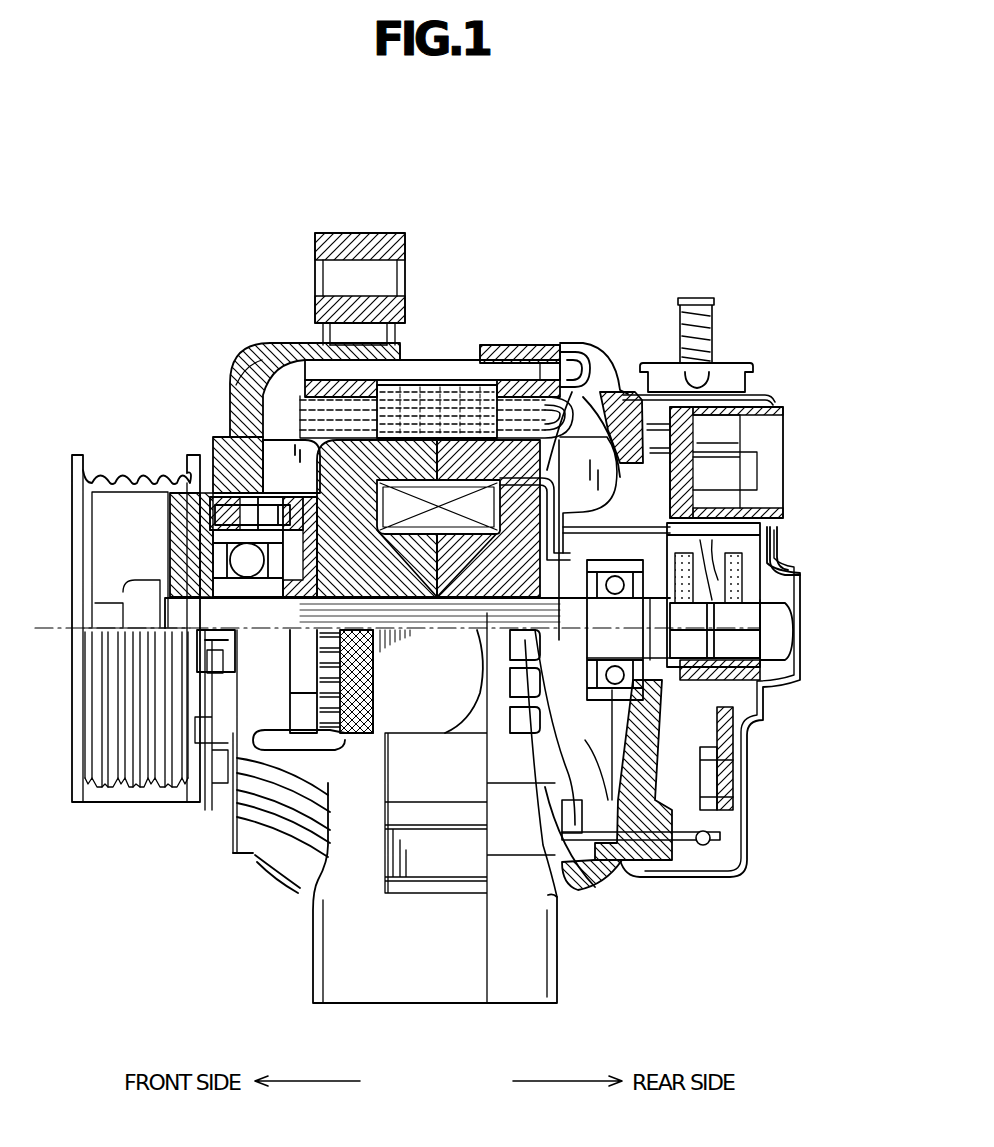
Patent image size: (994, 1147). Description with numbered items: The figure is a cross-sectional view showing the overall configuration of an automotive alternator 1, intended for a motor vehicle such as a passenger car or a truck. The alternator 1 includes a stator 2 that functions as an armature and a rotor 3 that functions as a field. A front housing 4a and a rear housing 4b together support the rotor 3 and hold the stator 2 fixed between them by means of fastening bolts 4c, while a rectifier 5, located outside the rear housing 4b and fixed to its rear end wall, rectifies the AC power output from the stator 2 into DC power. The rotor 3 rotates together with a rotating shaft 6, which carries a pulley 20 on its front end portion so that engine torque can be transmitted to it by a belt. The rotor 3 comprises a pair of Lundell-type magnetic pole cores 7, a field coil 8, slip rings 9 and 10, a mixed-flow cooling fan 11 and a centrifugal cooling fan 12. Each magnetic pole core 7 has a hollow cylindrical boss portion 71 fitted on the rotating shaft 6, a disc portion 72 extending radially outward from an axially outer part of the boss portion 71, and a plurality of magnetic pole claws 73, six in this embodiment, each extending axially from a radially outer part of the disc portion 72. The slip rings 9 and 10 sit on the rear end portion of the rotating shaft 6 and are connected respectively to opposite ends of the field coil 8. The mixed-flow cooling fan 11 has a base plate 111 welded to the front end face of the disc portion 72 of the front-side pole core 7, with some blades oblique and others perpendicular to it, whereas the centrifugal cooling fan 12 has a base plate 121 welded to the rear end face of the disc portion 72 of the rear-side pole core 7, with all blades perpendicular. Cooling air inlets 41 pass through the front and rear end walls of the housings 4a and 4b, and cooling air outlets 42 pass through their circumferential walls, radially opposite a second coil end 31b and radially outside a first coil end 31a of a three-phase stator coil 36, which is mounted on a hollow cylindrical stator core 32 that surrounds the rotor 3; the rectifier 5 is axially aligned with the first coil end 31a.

The automotive alternator 1 is at (622, 240).
The stator 2 is at (580, 380).
The rotor 3 is at (278, 420).
The front housing 4a is at (337, 350).
The rear housing 4b is at (540, 350).
The fastening bolts 4c is at (390, 333).
The rectifier 5 is at (723, 757).
The rotating shaft 6 is at (178, 610).
The magnetic pole cores 7 is at (593, 355).
The field coil 8 is at (447, 490).
The slip ring 9 is at (693, 625).
The slip ring 10 is at (733, 650).
The mixed-flow cooling fan 11 is at (275, 470).
The centrifugal cooling fan 12 is at (603, 490).
The pulley 20 is at (130, 470).
The first coil end 31a is at (522, 400).
The second coil end 31b is at (307, 397).
The stator core 32 is at (441, 395).
The stator coil 36 is at (340, 733).
The cooling air inlets 41 is at (230, 477).
The cooling air outlets 42 is at (233, 853).
The boss portion 71 is at (757, 518).
The disc portion 72 is at (245, 387).
The magnetic pole claws 73 is at (410, 455).
The base plate 111 is at (220, 463).
The base plate 121 is at (700, 542).